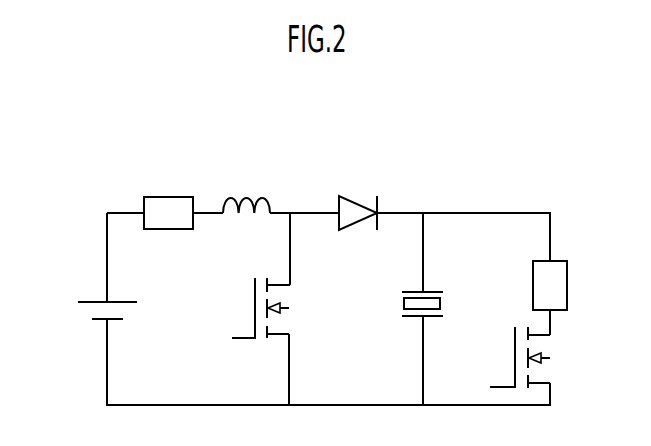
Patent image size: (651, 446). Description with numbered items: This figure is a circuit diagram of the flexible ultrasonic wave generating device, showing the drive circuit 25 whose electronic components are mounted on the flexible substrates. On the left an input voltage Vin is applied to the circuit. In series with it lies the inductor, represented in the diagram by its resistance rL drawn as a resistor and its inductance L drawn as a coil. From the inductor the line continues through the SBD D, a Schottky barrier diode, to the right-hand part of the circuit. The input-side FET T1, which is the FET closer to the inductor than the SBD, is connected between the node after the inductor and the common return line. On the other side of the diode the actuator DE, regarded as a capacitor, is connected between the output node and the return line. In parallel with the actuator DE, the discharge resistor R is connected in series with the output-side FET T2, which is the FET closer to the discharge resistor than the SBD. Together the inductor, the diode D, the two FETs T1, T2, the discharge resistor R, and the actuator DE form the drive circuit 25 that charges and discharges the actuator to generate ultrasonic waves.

The drive circuit 25 is at (307, 251).
The input voltage source Vin is at (67, 296).
The inductor series resistance rL is at (168, 191).
The inductor L is at (246, 181).
The SBD D is at (358, 191).
The input-side FET T1 is at (285, 308).
The actuator DE is at (432, 348).
The discharge resistor R is at (561, 285).
The output-side FET T2 is at (542, 357).